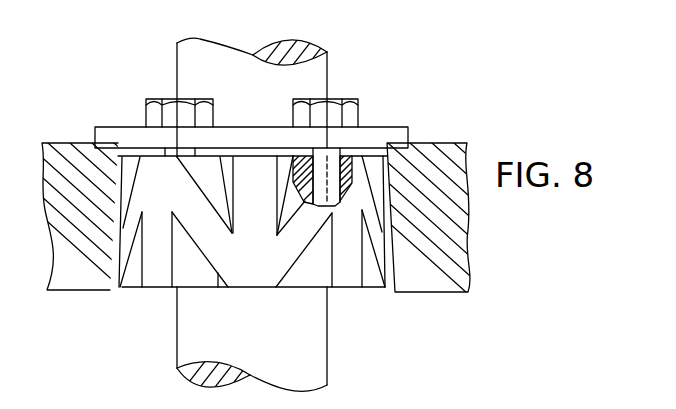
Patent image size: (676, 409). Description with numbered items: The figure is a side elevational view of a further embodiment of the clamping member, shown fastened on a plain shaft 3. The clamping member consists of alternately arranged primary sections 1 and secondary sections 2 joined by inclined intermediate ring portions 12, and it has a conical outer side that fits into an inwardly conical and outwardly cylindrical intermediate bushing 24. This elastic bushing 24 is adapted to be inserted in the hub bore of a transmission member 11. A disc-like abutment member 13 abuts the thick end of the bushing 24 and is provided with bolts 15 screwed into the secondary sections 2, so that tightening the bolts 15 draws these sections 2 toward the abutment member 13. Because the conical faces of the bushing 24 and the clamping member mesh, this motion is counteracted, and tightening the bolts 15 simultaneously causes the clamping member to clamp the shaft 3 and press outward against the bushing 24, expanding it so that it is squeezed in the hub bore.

The primary sections 1 is at (263, 266).
The secondary sections 2 is at (147, 170).
The shaft 3 is at (282, 77).
The transmission member 11 is at (435, 282).
The intermediate ring portions 12 is at (212, 247).
The abutment member 13 is at (373, 135).
The bolts 15 is at (168, 112).
The intermediate bushing 24 is at (97, 268).